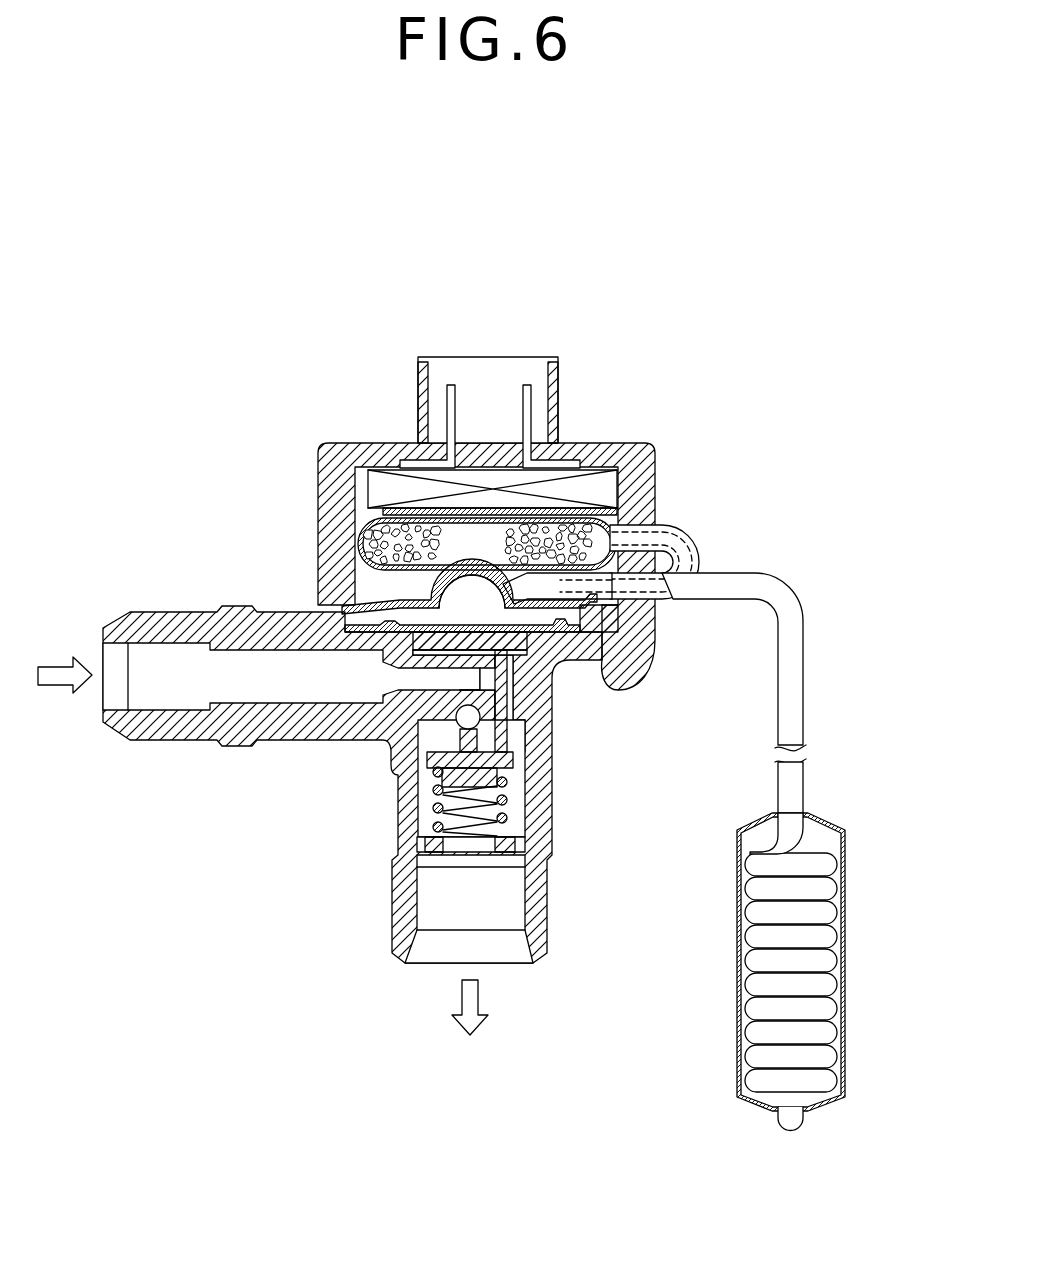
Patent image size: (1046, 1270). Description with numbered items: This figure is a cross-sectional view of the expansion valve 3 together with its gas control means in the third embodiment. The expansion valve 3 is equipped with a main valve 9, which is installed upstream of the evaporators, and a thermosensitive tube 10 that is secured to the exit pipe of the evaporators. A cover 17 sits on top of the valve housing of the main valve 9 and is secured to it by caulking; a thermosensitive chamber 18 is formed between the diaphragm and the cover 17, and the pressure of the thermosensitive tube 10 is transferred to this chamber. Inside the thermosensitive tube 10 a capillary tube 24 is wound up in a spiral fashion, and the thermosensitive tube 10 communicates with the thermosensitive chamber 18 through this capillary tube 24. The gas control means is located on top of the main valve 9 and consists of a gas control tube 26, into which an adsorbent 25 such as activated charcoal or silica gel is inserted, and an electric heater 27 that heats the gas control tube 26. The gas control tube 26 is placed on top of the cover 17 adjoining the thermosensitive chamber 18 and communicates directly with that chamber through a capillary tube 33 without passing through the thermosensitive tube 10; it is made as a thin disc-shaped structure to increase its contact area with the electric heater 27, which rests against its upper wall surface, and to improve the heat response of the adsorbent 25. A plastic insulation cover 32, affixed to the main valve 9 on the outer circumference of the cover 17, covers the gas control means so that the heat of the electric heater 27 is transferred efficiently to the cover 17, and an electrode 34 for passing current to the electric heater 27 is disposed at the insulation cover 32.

The expansion valve 3 is at (735, 410).
The main valve 9 is at (278, 766).
The thermosensitive tube 10 is at (731, 995).
The cover 17 is at (390, 598).
The thermosensitive chamber 18 is at (488, 616).
The capillary tube 24 is at (803, 682).
The adsorbent 25 is at (367, 535).
The gas control tube 26 is at (417, 497).
The electric heater 27 is at (593, 487).
The insulation cover 32 is at (320, 480).
The capillary tube 33 is at (699, 560).
The electrode 34 is at (523, 410).